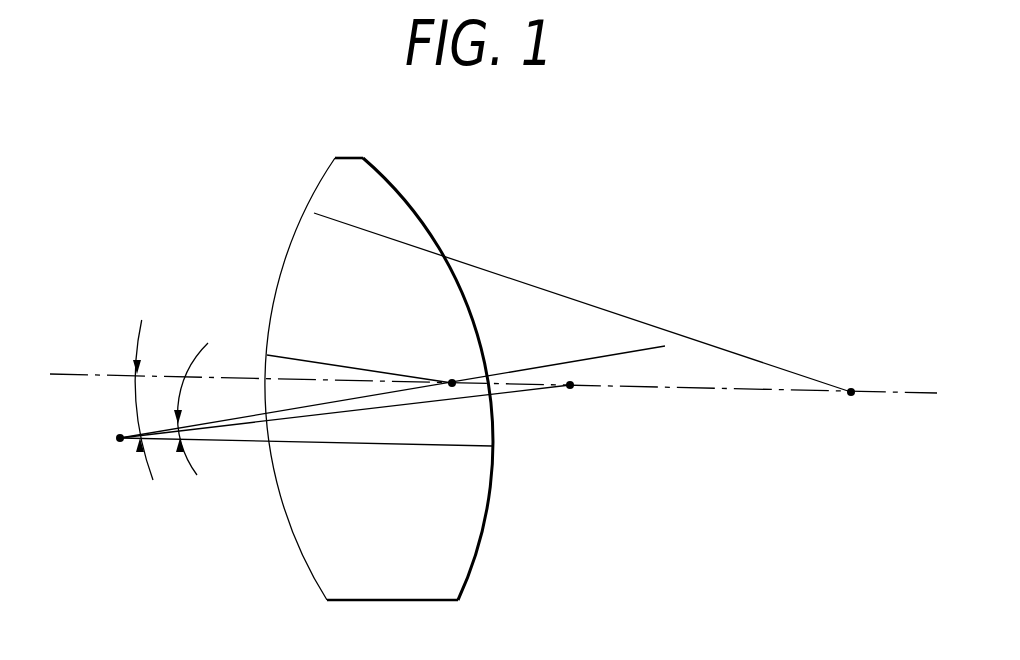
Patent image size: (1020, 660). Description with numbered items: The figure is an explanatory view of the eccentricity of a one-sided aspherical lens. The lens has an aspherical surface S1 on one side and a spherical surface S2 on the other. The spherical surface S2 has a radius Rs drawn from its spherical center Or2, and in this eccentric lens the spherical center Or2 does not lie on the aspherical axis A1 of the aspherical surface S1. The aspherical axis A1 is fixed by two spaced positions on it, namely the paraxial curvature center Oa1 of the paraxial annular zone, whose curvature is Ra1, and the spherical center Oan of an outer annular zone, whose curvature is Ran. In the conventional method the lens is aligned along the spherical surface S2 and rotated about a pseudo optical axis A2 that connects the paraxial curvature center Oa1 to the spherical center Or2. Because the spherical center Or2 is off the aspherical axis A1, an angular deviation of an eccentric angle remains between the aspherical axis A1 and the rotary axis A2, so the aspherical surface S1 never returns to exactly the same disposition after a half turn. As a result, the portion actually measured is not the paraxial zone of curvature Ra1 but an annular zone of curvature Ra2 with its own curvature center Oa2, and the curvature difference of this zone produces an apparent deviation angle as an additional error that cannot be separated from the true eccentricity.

The aspherical surface S1 is at (308, 550).
The spherical surface S2 is at (475, 552).
The aspherical axis A1 is at (665, 389).
The pseudo optical axis A2 is at (610, 355).
The curvature of an annular zone Ran is at (483, 268).
The curvature on the paraxial side Ra1 is at (300, 358).
The curvature of the measuring-portion annular zone Ra2 is at (382, 406).
The radius of the spherical surface Rs is at (433, 447).
The spherical center Or2 is at (103, 456).
The paraxial curvature center Oa1 is at (445, 406).
The curvature center of the second annular zone Oa2 is at (570, 406).
The spherical center of an annular zone Oan is at (852, 374).